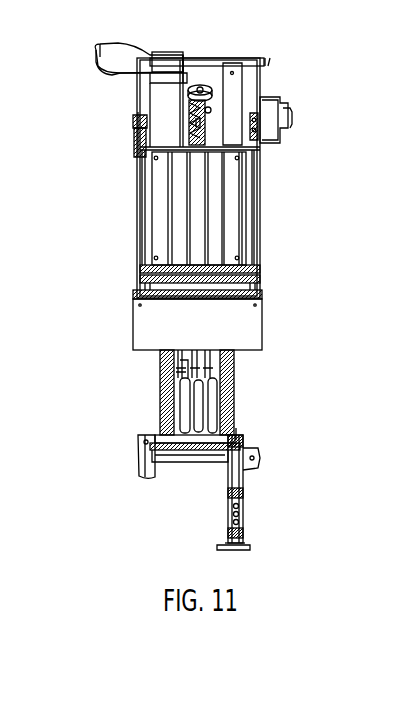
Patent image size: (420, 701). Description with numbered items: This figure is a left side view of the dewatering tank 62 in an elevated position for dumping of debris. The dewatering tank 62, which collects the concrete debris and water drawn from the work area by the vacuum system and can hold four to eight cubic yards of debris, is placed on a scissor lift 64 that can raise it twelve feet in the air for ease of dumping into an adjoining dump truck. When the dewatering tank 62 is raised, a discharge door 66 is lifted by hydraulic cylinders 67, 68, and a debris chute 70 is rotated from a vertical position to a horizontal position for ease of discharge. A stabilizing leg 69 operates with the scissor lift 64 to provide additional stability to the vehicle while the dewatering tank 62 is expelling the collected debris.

The dewatering tank 62 is at (268, 206).
The scissor lift 64 is at (233, 404).
The discharge door 66 is at (232, 244).
The hydraulic cylinder 67 is at (133, 125).
The hydraulic cylinder 68 is at (268, 113).
The stabilizing leg 69 is at (247, 495).
The debris chute 70 is at (142, 330).